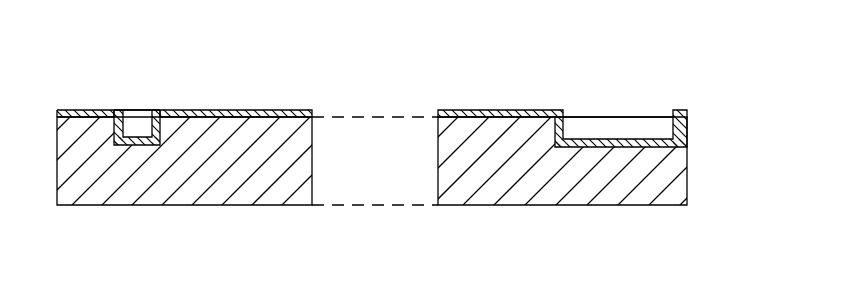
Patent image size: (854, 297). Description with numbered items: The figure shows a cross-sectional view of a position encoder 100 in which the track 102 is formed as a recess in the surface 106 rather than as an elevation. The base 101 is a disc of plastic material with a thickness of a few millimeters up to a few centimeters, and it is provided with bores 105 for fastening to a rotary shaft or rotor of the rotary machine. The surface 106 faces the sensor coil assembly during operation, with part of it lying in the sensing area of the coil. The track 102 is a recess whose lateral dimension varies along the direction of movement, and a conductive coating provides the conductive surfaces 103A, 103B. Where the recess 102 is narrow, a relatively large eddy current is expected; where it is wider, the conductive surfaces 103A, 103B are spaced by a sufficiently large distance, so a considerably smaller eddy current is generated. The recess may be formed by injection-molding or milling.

The position encoder 100 is at (702, 63).
The base 101 is at (686, 204).
The track 102 is at (628, 121).
The conductive surface 103A is at (245, 110).
The conductive surface 103B is at (135, 111).
The bores 105 is at (388, 177).
The surface 106 is at (473, 110).